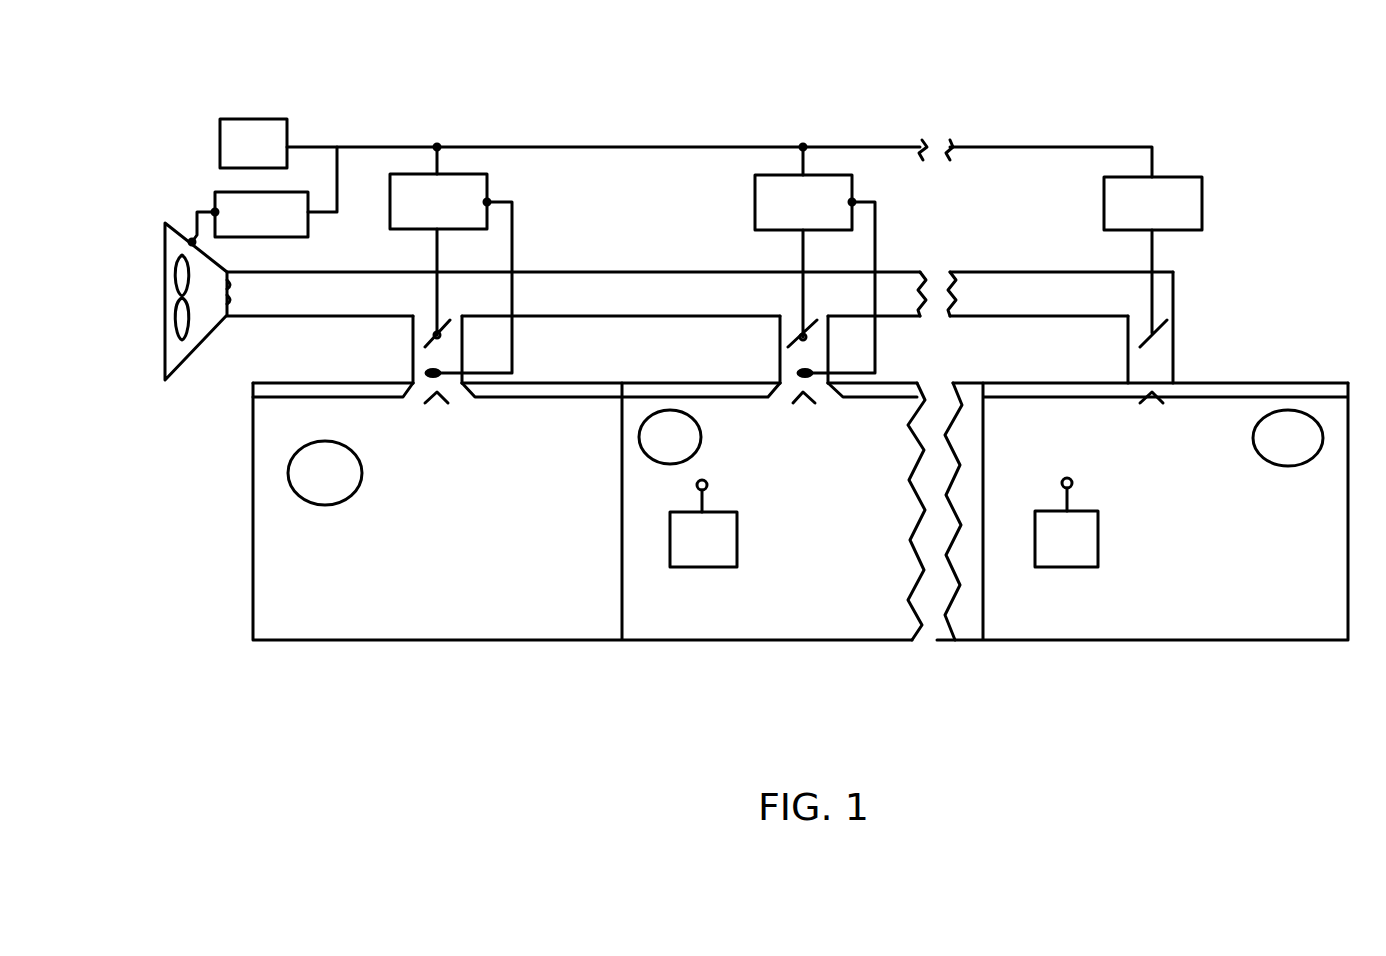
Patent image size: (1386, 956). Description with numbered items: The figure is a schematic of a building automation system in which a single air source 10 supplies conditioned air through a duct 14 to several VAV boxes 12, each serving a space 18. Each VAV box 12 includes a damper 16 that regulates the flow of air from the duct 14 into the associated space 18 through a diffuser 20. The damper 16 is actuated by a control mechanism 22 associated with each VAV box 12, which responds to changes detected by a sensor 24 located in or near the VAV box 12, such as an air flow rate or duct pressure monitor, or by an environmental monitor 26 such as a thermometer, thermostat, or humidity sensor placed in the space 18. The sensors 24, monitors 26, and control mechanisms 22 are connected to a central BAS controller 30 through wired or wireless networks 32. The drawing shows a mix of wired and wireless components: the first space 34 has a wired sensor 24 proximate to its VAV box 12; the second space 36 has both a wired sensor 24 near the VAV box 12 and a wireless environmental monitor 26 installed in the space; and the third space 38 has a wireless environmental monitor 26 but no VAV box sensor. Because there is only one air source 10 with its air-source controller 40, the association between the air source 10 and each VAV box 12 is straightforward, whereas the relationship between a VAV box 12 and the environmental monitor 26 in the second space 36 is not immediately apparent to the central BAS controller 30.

The air source 10 is at (185, 370).
The VAV box 12 is at (413, 350).
The duct 14 is at (600, 292).
The damper 16 is at (427, 328).
The space 18 is at (393, 603).
The diffuser 20 is at (466, 418).
The control mechanism 22 is at (475, 185).
The sensor 24 is at (422, 373).
The environmental monitor 26 is at (717, 540).
The central BAS controller 30 is at (260, 119).
The network 32 is at (657, 147).
The first space 34 is at (325, 473).
The second space 36 is at (670, 437).
The third space 38 is at (1288, 438).
The air-source controller 40 is at (247, 205).